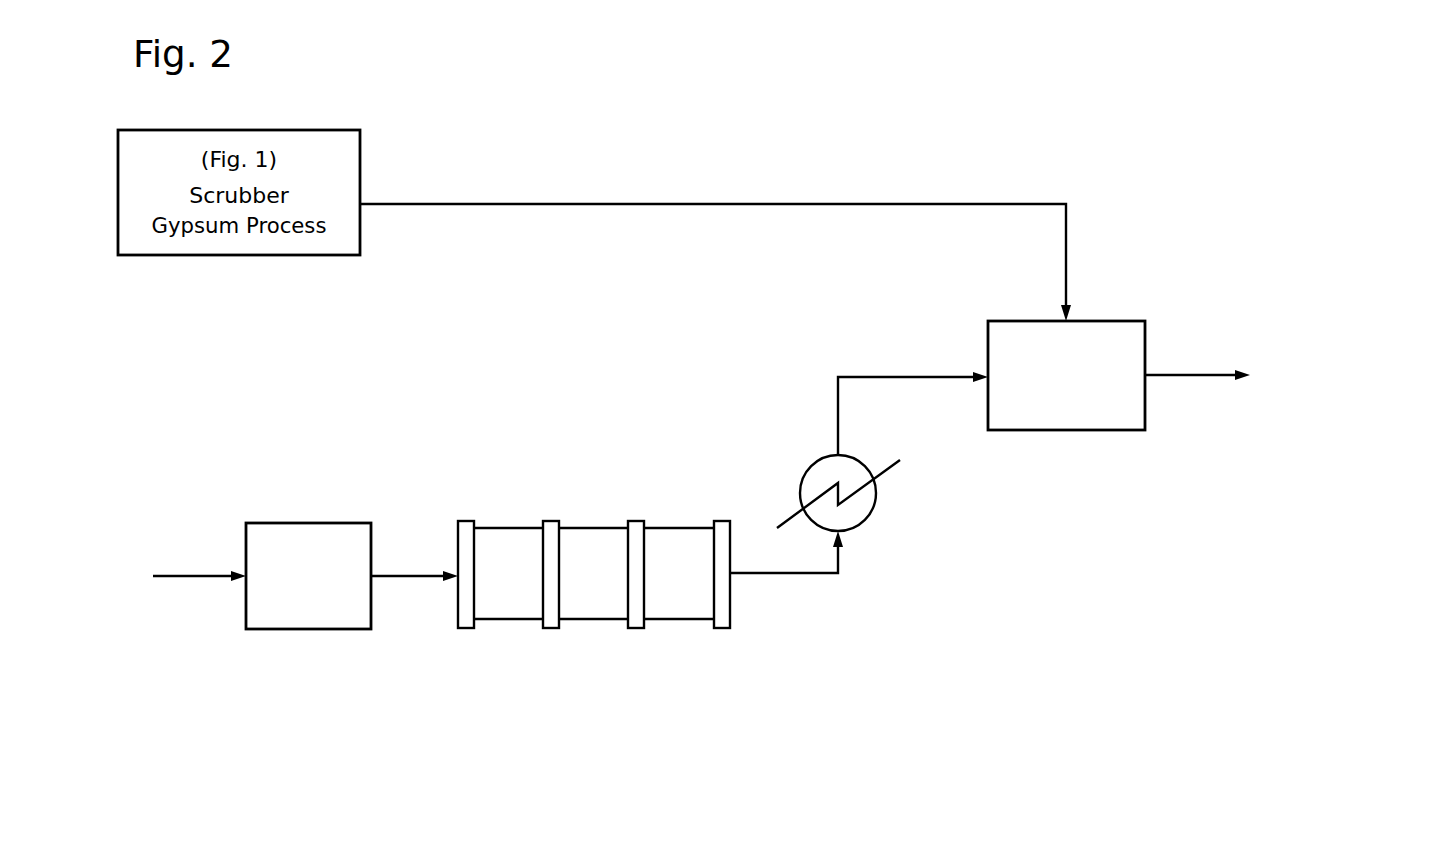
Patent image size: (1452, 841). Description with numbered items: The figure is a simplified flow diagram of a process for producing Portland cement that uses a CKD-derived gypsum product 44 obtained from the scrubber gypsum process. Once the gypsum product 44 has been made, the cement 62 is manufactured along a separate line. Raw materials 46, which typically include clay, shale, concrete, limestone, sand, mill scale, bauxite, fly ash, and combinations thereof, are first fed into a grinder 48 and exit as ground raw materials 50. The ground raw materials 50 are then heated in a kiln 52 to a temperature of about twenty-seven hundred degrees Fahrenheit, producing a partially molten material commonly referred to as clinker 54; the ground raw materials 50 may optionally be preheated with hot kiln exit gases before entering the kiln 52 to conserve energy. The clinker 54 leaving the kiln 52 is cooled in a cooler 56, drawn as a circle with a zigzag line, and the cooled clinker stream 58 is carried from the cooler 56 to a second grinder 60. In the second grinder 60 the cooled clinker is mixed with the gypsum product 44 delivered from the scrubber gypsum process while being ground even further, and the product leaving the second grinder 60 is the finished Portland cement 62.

The gypsum product 44 is at (453, 204).
The raw materials 46 is at (202, 576).
The grinder 48 is at (290, 585).
The ground raw materials 50 is at (408, 576).
The kiln 52 is at (581, 583).
The clinker 54 is at (787, 573).
The cooler 56 is at (872, 515).
The cooled clinker stream 58 is at (893, 375).
The second grinder 60 is at (1050, 388).
The cement 62 is at (1173, 375).